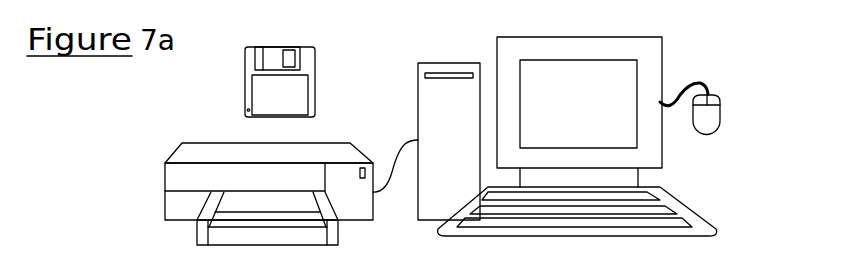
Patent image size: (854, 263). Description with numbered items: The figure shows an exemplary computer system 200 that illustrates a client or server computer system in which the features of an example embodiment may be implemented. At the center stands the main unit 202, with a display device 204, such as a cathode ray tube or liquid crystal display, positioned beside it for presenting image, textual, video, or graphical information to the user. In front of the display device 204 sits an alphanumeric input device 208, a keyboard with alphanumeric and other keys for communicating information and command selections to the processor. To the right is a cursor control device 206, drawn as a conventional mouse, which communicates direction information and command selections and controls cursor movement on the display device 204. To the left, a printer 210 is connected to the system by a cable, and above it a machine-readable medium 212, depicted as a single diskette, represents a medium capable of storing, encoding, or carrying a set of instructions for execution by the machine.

The computer system 200 is at (672, 23).
The computer tower / processing unit 202 is at (450, 65).
The display device 204 is at (662, 67).
The cursor control device 206 is at (720, 115).
The alphanumeric input device 208 is at (713, 210).
The printer 210 is at (168, 158).
The machine-readable medium 212 is at (243, 100).